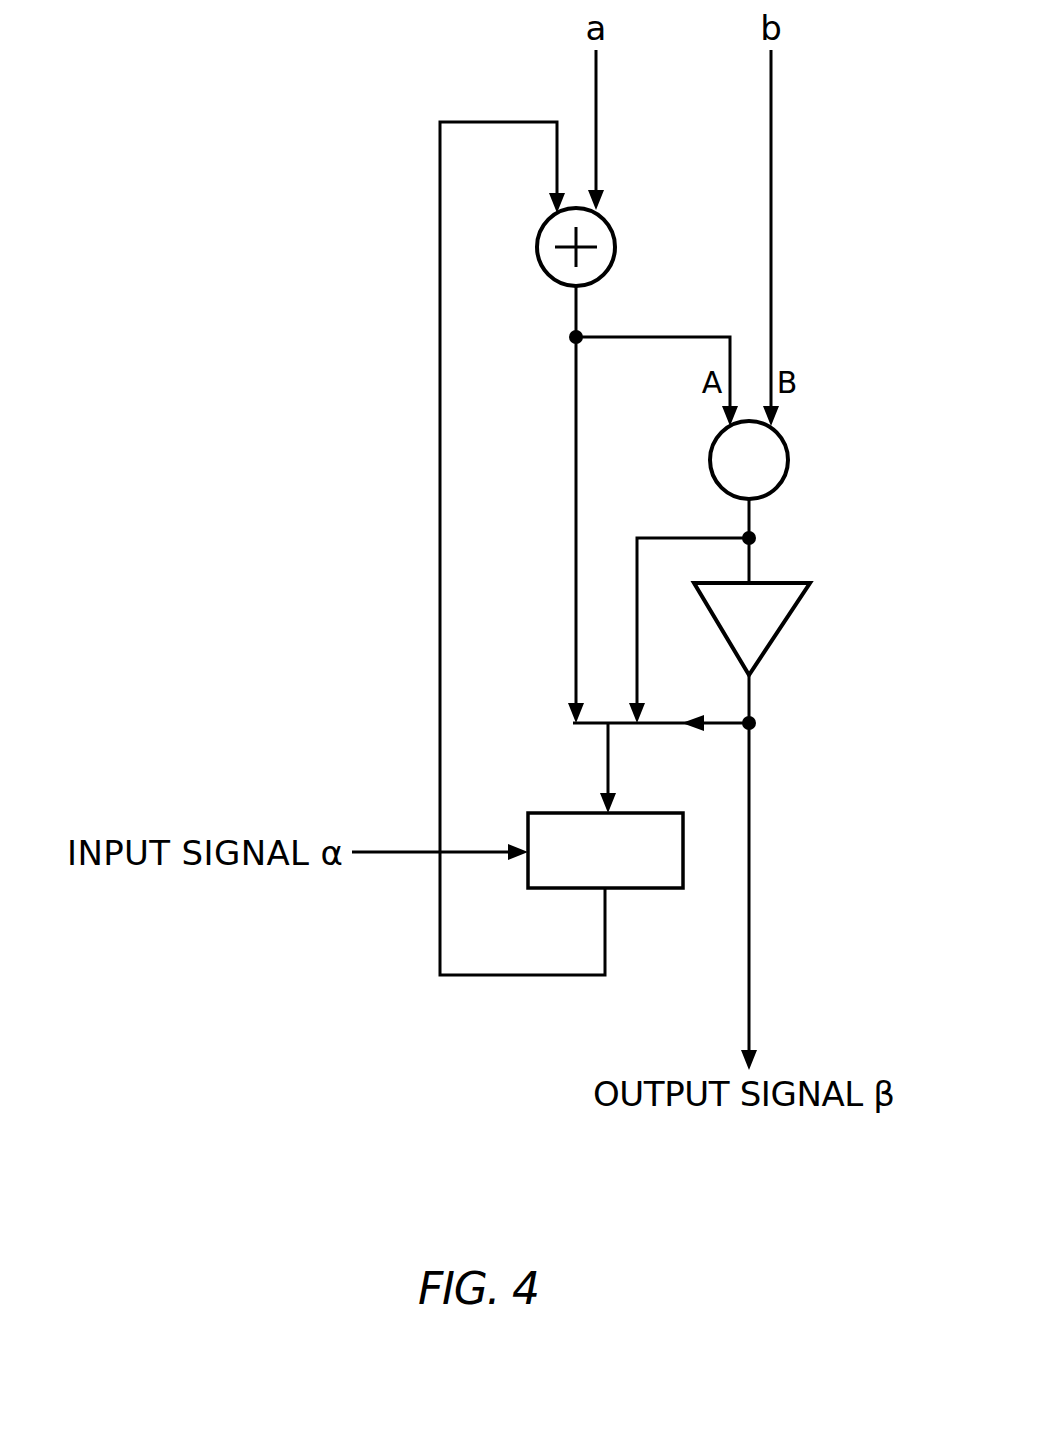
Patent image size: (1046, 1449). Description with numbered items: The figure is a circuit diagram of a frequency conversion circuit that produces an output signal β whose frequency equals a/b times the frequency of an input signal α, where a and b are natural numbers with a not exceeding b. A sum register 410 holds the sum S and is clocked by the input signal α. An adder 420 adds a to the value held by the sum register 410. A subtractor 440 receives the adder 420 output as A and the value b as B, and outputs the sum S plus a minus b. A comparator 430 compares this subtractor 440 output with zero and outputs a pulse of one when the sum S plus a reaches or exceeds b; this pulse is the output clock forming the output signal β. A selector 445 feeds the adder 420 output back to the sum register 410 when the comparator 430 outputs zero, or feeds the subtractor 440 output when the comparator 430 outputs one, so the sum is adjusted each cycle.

The sum register 410 is at (659, 888).
The adder 420 is at (615, 247).
The comparator 430 is at (776, 633).
The subtractor 440 is at (789, 460).
The selector 445 is at (660, 723).